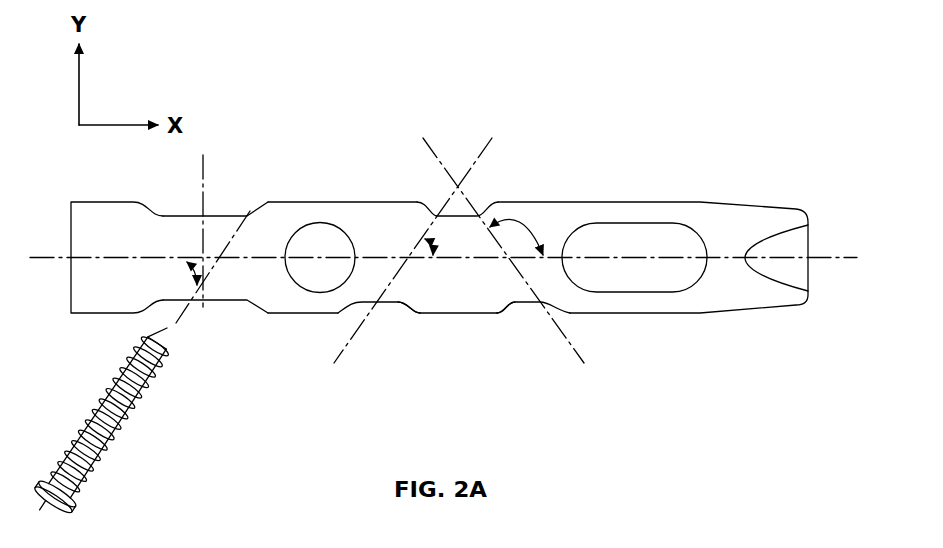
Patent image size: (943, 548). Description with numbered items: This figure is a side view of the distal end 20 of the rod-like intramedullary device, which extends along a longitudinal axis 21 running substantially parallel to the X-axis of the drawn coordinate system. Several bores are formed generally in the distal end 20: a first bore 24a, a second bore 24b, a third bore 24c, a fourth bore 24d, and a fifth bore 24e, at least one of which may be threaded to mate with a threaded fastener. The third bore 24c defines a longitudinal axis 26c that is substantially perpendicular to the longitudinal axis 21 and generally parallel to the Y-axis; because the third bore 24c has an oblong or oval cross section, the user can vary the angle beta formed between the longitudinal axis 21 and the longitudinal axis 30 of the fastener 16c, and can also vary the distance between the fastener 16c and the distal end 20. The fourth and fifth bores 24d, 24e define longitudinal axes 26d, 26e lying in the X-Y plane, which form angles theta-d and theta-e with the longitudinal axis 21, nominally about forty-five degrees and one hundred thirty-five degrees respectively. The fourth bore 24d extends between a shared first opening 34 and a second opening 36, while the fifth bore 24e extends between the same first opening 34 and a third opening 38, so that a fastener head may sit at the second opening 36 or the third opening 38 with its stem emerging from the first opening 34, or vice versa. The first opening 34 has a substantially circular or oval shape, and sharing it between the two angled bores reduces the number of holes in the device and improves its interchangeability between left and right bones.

The fastener 16c is at (113, 433).
The distal end 20 is at (810, 230).
The longitudinal axis 21 is at (845, 259).
The first bore 24a is at (343, 240).
The second bore 24b is at (660, 228).
The third bore 24c is at (257, 204).
The fourth bore 24d is at (353, 313).
The fifth bore 24e is at (570, 314).
The longitudinal axis of third bore 26c is at (203, 192).
The longitudinal axis of fourth bore 26d is at (487, 147).
The longitudinal axis of fifth bore 26e is at (433, 148).
The longitudinal axis of fastener 30 is at (175, 322).
The first opening 34 is at (424, 196).
The second opening 36 is at (400, 315).
The third opening 38 is at (513, 313).